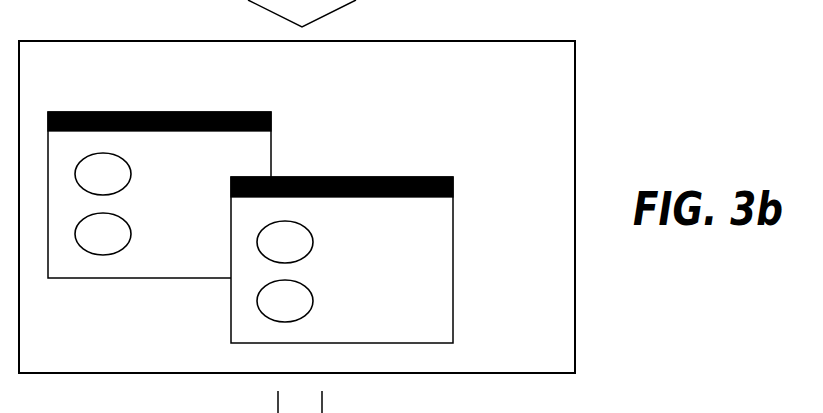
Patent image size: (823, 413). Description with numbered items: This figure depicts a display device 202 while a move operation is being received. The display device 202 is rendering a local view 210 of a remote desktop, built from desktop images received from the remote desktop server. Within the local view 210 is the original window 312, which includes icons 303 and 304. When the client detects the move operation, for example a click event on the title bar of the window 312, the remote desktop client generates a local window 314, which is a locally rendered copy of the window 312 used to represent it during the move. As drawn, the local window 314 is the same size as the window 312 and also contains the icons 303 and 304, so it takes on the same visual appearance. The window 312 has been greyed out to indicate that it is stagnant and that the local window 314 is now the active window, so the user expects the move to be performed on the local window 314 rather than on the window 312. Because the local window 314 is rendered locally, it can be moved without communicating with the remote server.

The display device 202 is at (657, 140).
The local view 210 is at (297, 59).
The window 312 is at (271, 145).
The local window 314 is at (453, 210).
The icon 303 is at (194, 208).
The icon 304 is at (194, 267).